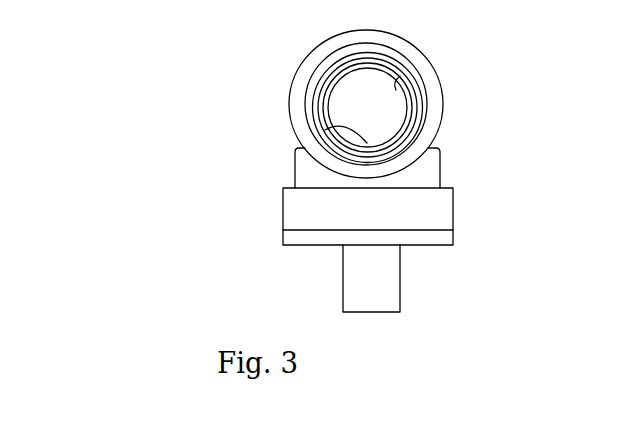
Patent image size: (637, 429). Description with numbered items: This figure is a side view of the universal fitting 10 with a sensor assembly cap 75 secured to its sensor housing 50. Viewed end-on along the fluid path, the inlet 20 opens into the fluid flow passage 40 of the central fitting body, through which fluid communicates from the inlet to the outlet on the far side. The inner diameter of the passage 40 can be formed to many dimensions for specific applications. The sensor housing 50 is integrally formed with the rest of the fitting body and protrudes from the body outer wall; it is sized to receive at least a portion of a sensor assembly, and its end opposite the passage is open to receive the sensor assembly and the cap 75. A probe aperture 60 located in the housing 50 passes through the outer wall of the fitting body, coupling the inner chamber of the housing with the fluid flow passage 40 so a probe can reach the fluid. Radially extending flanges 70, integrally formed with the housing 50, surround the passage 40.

The fitting 10 is at (178, 85).
The inlet port 20 is at (397, 105).
The fluid flow passage 40 is at (392, 84).
The sensor housing 50 is at (453, 200).
The probe aperture 60 is at (325, 130).
The radially extending flanges 70 is at (320, 52).
The sensor assembly cap 75 is at (303, 247).